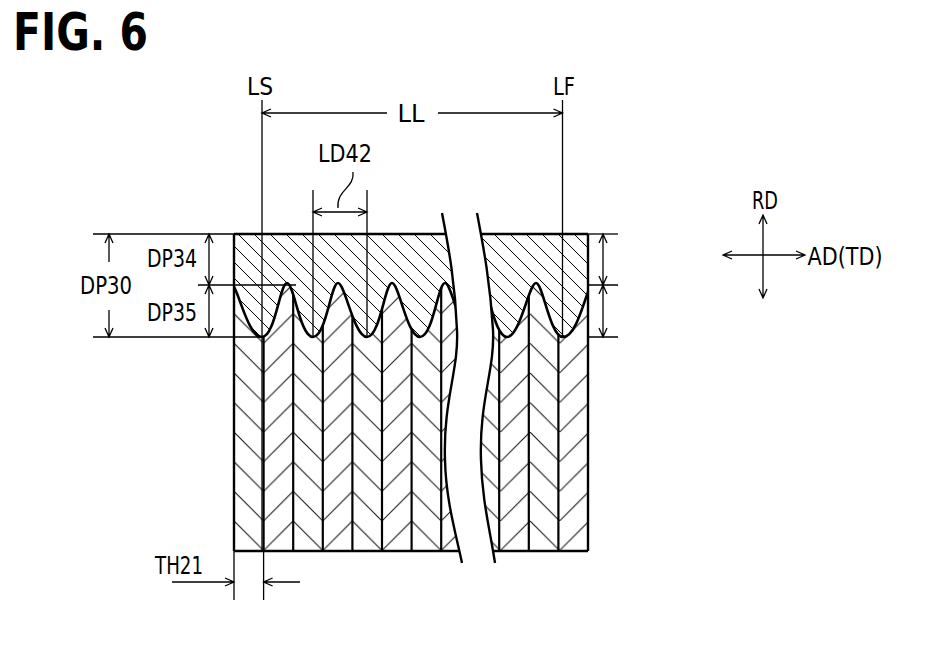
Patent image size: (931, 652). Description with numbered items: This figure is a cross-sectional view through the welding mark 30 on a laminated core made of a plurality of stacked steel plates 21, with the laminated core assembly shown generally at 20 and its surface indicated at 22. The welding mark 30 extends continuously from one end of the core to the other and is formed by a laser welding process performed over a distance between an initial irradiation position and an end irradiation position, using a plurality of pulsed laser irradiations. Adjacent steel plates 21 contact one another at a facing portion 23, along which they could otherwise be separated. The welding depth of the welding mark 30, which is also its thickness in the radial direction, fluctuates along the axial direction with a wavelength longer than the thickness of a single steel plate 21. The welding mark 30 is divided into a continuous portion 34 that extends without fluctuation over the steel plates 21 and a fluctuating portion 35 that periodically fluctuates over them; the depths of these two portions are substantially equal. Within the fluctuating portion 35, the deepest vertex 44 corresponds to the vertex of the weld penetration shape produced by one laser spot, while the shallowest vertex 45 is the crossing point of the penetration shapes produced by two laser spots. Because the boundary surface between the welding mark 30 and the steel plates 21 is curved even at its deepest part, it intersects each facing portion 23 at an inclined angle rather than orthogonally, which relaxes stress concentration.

The absorbent body 20 is at (658, 172).
The steel plate 21 is at (588, 521).
The top surface 22 is at (579, 234).
The facing portion 23 is at (558, 463).
The welding mark 30 is at (243, 234).
The continuous portion 34 is at (606, 256).
The fluctuating portion 35 is at (606, 310).
The deepest vertex 44 is at (333, 297).
The shallowest vertex 45 is at (346, 318).